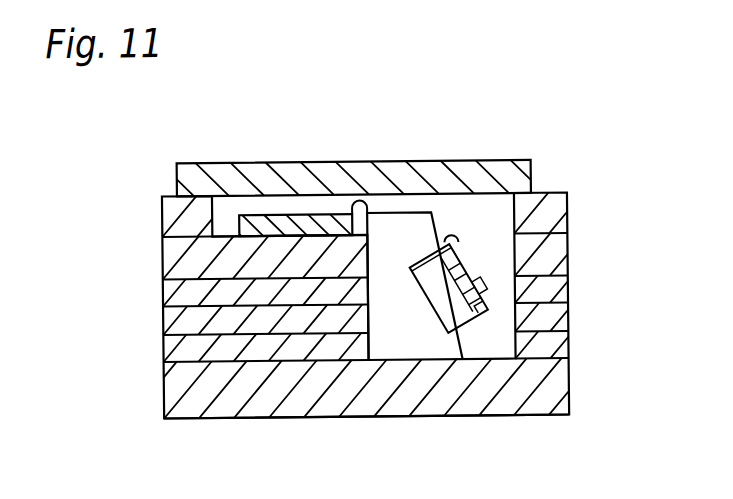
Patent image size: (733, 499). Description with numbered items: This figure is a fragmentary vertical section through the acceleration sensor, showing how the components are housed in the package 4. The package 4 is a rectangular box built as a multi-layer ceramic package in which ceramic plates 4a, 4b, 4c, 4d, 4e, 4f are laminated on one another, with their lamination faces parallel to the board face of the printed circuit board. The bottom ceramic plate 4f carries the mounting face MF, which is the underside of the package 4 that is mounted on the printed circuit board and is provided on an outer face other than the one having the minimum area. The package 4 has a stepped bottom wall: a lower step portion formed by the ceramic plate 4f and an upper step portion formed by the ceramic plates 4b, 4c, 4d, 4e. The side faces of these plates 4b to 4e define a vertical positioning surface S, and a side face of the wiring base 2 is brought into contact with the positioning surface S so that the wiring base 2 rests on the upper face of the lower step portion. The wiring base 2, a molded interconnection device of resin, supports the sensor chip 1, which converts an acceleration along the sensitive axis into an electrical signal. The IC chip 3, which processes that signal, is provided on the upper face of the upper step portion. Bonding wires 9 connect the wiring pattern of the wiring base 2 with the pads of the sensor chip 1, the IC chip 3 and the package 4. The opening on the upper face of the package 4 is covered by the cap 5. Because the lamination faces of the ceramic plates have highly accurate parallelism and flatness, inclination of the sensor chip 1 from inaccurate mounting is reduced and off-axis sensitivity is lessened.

The sensor chip 1 is at (460, 260).
The wiring base 2 is at (412, 213).
The IC chip 3 is at (277, 213).
The package 4 is at (163, 262).
The ceramic plate 4a is at (553, 215).
The ceramic plate 4b is at (550, 259).
The ceramic plate 4c is at (558, 293).
The ceramic plate 4d is at (560, 321).
The ceramic plate 4e is at (560, 348).
The ceramic plate 4f is at (558, 401).
The cap 5 is at (222, 161).
The bonding wires 9 is at (449, 240).
The positioning surface S is at (368, 250).
The mounting face MF is at (475, 417).